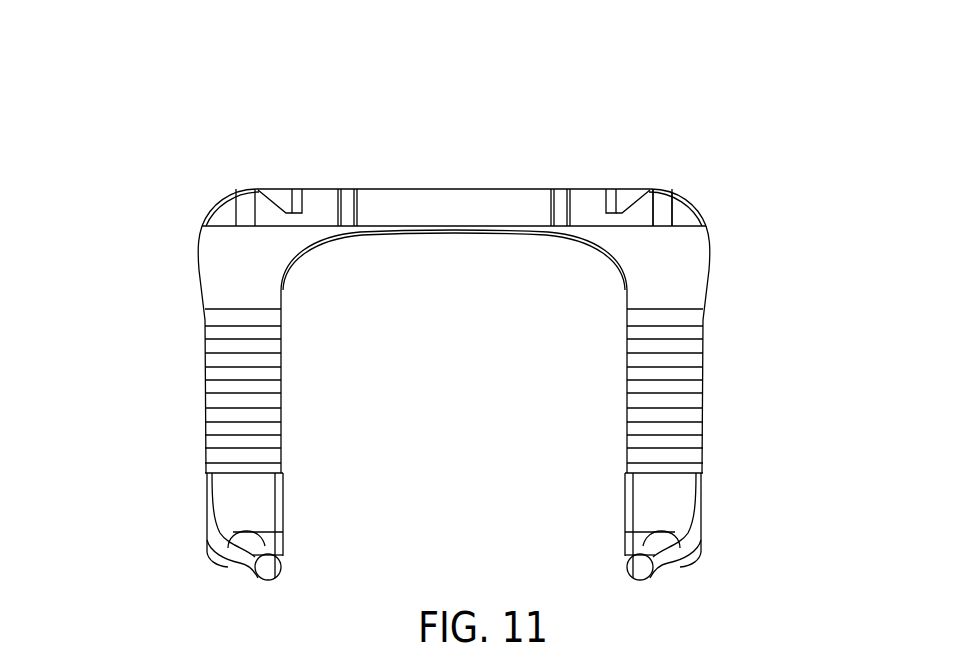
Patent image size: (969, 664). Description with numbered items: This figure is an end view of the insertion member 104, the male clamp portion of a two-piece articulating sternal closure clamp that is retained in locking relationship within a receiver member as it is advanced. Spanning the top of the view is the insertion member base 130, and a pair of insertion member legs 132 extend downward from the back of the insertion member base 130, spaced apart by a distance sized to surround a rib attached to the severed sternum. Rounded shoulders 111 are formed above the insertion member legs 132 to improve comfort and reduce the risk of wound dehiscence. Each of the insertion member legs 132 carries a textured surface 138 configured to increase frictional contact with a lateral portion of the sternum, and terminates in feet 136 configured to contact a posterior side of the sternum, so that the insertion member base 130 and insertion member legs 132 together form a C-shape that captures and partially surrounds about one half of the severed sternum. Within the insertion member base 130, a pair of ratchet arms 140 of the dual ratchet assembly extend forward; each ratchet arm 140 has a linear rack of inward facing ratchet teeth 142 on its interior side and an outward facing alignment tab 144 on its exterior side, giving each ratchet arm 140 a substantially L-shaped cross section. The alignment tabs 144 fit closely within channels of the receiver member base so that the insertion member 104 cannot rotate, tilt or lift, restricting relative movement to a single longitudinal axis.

The insertion member 104 is at (815, 146).
The rounded shoulders 111 is at (670, 210).
The insertion member base 130 is at (447, 203).
The insertion member legs 132 is at (225, 292).
The feet 136 is at (215, 532).
The textured surface 138 is at (223, 417).
The ratchet arms 140 is at (317, 205).
The ratchet teeth 142 is at (338, 203).
The alignment tabs 144 is at (288, 218).